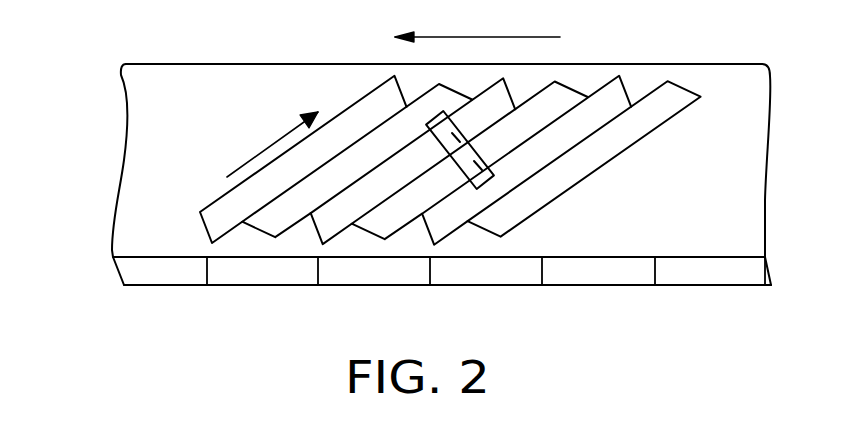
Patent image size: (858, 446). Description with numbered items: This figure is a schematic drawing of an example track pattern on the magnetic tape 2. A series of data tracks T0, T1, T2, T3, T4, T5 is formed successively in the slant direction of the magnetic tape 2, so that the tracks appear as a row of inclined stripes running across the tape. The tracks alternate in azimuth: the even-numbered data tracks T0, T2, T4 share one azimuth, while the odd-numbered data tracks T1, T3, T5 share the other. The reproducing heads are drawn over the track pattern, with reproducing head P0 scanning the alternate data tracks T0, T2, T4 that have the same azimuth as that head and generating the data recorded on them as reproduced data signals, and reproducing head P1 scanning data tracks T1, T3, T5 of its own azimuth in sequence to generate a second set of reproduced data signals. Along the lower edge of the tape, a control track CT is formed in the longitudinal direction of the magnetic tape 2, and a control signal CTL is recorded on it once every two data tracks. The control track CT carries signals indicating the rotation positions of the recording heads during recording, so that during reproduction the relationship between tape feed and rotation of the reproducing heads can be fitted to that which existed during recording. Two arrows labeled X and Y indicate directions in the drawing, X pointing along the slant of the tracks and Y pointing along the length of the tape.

The magnetic tape 2 is at (671, 63).
The data track T0 is at (395, 78).
The data track T1 is at (441, 86).
The data track T2 is at (505, 80).
The data track T3 is at (557, 83).
The data track T4 is at (620, 79).
The data track T5 is at (682, 84).
The reproducing head P0 is at (457, 137).
The reproducing head P1 is at (478, 164).
The control signal CTL is at (207, 270).
The control track CT is at (768, 265).
The head scanning direction X is at (272, 144).
The tape running direction Y is at (477, 26).